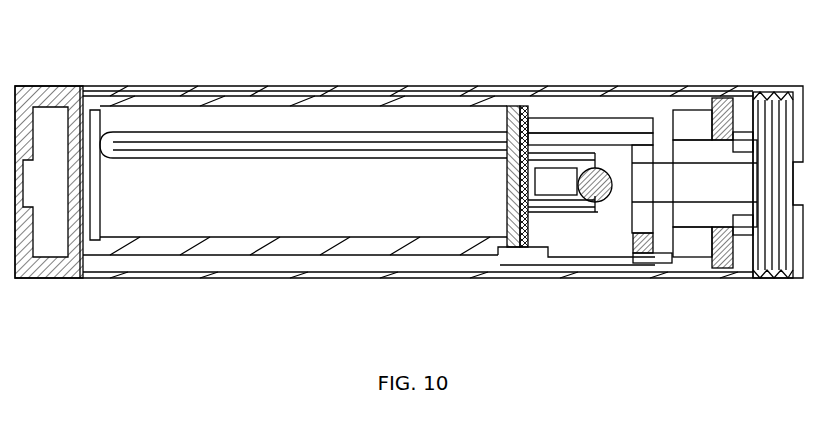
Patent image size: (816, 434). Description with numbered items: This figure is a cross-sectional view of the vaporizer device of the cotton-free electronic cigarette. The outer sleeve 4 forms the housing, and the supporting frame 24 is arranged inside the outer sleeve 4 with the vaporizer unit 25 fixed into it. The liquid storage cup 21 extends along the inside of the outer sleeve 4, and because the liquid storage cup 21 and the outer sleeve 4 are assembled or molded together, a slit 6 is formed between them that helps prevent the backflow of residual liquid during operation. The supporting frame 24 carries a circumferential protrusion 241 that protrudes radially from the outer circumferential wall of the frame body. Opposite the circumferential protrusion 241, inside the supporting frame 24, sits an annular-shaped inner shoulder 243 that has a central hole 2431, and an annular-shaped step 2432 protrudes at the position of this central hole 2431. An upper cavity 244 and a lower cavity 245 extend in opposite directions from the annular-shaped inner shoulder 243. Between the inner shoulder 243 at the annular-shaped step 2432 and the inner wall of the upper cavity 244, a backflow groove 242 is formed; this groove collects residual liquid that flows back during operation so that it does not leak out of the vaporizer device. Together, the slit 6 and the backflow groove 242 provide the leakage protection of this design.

The outer sleeve 4 is at (250, 88).
The slit 6 is at (158, 91).
The liquid storage cup 21 is at (310, 104).
The supporting frame 24 is at (593, 132).
The backflow groove 242 is at (643, 136).
The annular-shaped inner shoulder 243 is at (658, 178).
The central hole 2431 is at (680, 156).
The annular-shaped step 2432 is at (643, 214).
The circumferential protrusion 241 is at (663, 266).
The upper cavity 244 is at (588, 256).
The lower cavity 245 is at (713, 214).
The vaporizer unit 25 is at (587, 199).